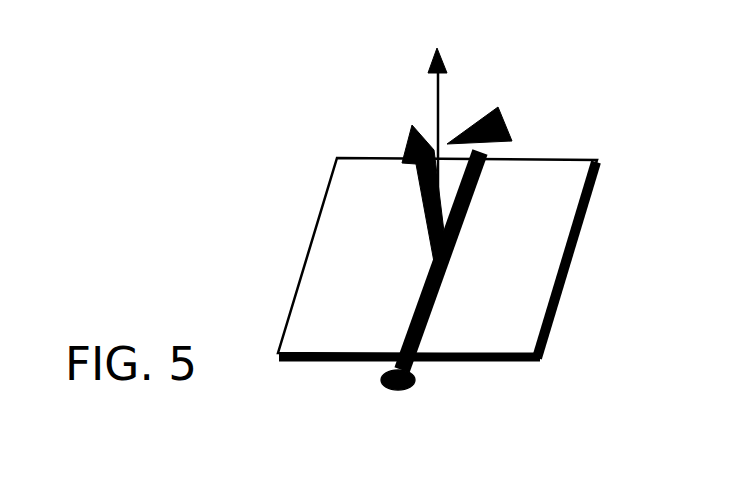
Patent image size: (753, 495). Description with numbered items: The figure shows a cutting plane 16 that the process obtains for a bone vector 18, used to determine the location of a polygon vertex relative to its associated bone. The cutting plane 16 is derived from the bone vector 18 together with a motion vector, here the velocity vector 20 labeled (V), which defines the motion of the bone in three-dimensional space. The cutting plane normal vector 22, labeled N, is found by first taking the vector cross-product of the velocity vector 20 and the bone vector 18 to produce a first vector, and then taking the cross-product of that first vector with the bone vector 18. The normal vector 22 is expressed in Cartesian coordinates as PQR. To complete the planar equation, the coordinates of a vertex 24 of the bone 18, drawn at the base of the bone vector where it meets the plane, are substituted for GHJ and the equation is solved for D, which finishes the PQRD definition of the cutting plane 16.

The cutting plane 16 is at (573, 250).
The bone vector 18 is at (497, 107).
The velocity vector 20 is at (442, 53).
The cutting plane normal vector 22 is at (410, 133).
The vertex 24 is at (383, 362).